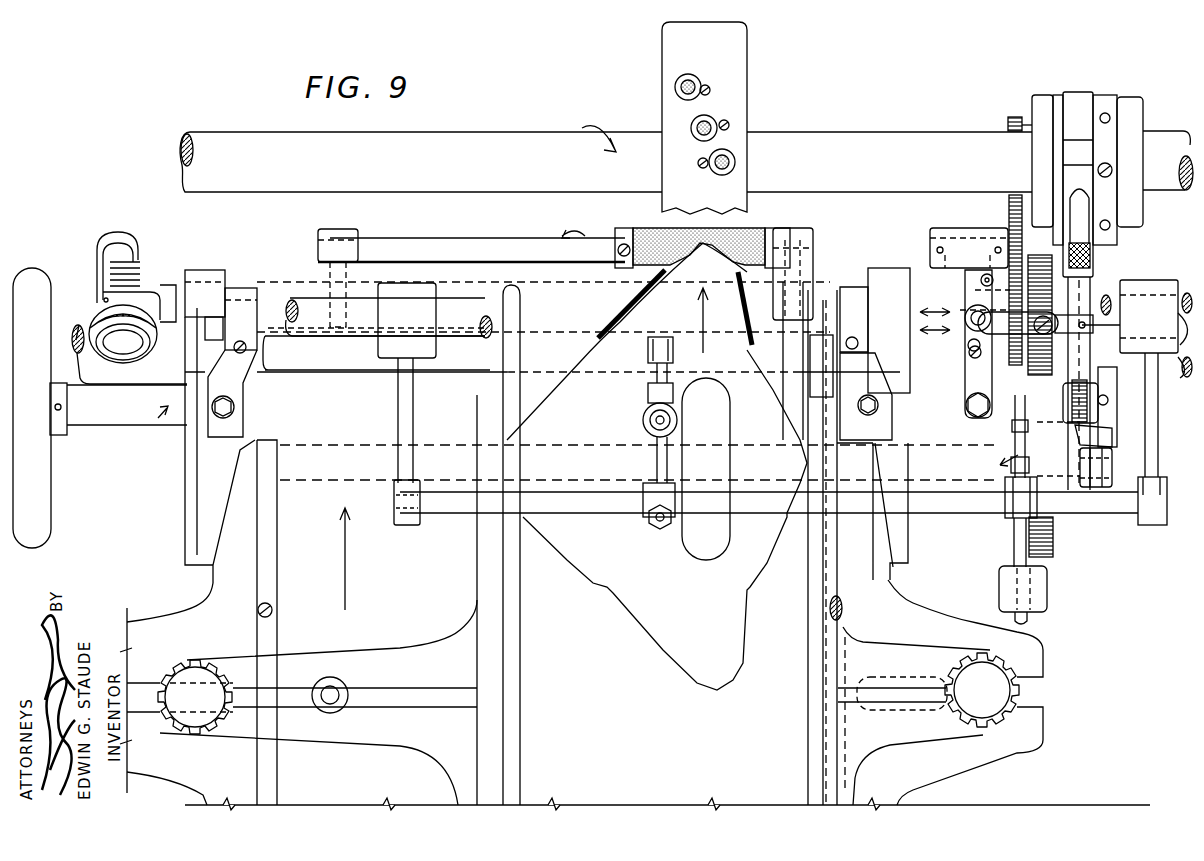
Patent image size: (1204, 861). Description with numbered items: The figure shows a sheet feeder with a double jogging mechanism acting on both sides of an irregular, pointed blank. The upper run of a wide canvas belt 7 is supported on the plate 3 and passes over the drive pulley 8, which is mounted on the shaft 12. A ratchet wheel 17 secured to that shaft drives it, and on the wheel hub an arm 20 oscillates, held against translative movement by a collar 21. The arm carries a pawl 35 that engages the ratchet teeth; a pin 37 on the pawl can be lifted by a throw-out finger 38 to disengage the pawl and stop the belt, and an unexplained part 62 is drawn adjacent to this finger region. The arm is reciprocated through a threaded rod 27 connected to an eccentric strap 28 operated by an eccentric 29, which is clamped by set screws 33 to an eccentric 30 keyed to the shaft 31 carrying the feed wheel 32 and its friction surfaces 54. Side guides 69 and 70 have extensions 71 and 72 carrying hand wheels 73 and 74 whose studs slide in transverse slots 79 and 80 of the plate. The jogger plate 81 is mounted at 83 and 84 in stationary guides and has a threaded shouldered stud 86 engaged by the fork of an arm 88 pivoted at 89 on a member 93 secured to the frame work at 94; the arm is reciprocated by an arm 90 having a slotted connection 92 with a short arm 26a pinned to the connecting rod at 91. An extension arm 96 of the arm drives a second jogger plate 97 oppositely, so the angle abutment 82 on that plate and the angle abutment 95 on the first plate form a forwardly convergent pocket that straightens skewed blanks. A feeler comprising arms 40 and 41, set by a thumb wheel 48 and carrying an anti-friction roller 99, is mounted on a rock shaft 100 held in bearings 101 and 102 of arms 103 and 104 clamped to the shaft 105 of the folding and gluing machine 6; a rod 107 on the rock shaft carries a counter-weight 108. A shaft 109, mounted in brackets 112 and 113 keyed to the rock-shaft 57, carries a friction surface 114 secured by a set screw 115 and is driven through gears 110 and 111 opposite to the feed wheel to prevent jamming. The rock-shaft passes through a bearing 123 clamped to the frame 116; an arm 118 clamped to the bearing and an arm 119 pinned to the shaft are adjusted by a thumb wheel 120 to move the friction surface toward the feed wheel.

The plate 3 is at (282, 462).
The folding and gluing machine 6 is at (82, 325).
The wide canvas belt 7 is at (282, 436).
The drive pulley 8 is at (265, 418).
The shaft 12 is at (118, 422).
The ratchet wheel 17 is at (1053, 538).
The arm 20 is at (1113, 454).
The collar 21 is at (1104, 432).
The short arm 26a is at (1115, 318).
The threaded rod 27 is at (1082, 282).
The eccentric strap 28 is at (1082, 98).
The eccentric 29 is at (1058, 102).
The eccentric 30 is at (1040, 105).
The shaft 31 is at (865, 142).
The feed wheel 32 is at (740, 124).
The set screws 33 is at (1108, 168).
The pawl 35 is at (1020, 420).
The pin 37 is at (1012, 462).
The throw-out finger 38 is at (1012, 476).
The arm 40 is at (656, 455).
The lever 41 is at (650, 372).
The thumb wheel 48 is at (642, 420).
The friction surfaces 54 is at (700, 88).
The rock-shaft 57 is at (232, 292).
The pin 62 is at (1013, 432).
The side guide 69 is at (480, 605).
The side guide 70 is at (828, 760).
The extension 71 is at (400, 652).
The extension 72 is at (930, 730).
The hand wheel 73 is at (195, 690).
The hand wheel 74 is at (990, 712).
The transverse slot 79 is at (160, 690).
The transverse slot 80 is at (1030, 690).
The jogger plate 81 is at (810, 272).
The angle abutment 82 is at (744, 340).
The guide mounting 83 is at (248, 296).
The guide mounting 84 is at (848, 290).
The threaded shouldered stud 86 is at (980, 280).
The arm 88 is at (975, 292).
The pivot 89 is at (968, 340).
The arm 90 is at (1011, 319).
The pin 91 is at (1090, 326).
The slotted connection 92 is at (1058, 333).
The member 93 is at (966, 405).
The cap screw securing point 94 is at (1012, 412).
The angle abutment 95 is at (645, 296).
The extension arm 96 is at (968, 354).
The jogger plate 97 is at (543, 365).
The anti-friction roller 99 is at (673, 348).
The rock shaft 100 is at (1088, 503).
The bearing 101 is at (1150, 505).
The bearing 102 is at (406, 510).
The arm 103 is at (1152, 402).
The arm 104 is at (404, 414).
The shaft 105 is at (330, 338).
The rod 107 is at (1020, 542).
The counter-weight 108 is at (1006, 589).
The shaft 109 is at (470, 246).
The gear 110 is at (1008, 212).
The gear 111 is at (1012, 120).
The bracket 112 is at (962, 232).
The bracket 113 is at (343, 235).
The friction surface 114 is at (756, 232).
The set screw 115 is at (622, 244).
The frame 116 is at (200, 274).
The arm 118 is at (143, 278).
The arm 119 is at (102, 262).
The thumb wheel 120 is at (112, 350).
The bearing 123 is at (168, 288).